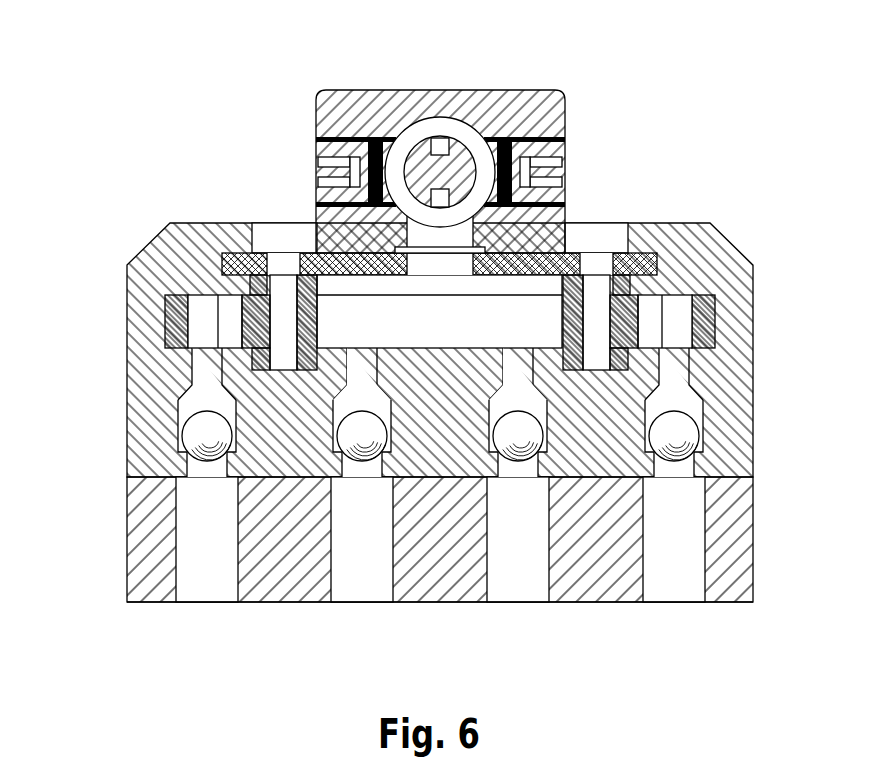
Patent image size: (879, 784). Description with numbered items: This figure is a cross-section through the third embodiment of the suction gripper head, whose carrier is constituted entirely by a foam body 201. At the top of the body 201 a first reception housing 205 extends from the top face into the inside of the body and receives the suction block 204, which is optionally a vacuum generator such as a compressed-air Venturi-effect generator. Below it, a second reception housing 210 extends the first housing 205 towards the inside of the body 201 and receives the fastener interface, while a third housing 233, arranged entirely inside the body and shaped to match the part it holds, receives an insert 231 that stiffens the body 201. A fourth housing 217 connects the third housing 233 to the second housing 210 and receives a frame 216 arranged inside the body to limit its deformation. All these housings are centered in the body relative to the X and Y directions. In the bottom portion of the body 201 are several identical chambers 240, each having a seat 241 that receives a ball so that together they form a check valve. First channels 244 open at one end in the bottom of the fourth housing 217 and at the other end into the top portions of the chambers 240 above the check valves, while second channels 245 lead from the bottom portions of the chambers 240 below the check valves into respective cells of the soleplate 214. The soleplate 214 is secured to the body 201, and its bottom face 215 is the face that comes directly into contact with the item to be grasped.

The foam body 201 is at (127, 442).
The suction block 204 is at (510, 89).
The first reception housing 205 is at (603, 240).
The second reception housing 210 is at (221, 268).
The soleplate 214 is at (127, 548).
The bottom face 215 is at (590, 604).
The frame 216 is at (174, 318).
The fourth housing 217 is at (652, 308).
The insert 231 is at (268, 366).
The third housing 233 is at (250, 372).
The chamber 240 is at (188, 407).
The seat 241 is at (190, 453).
The first channel 244 is at (515, 365).
The second channel 245 is at (358, 474).